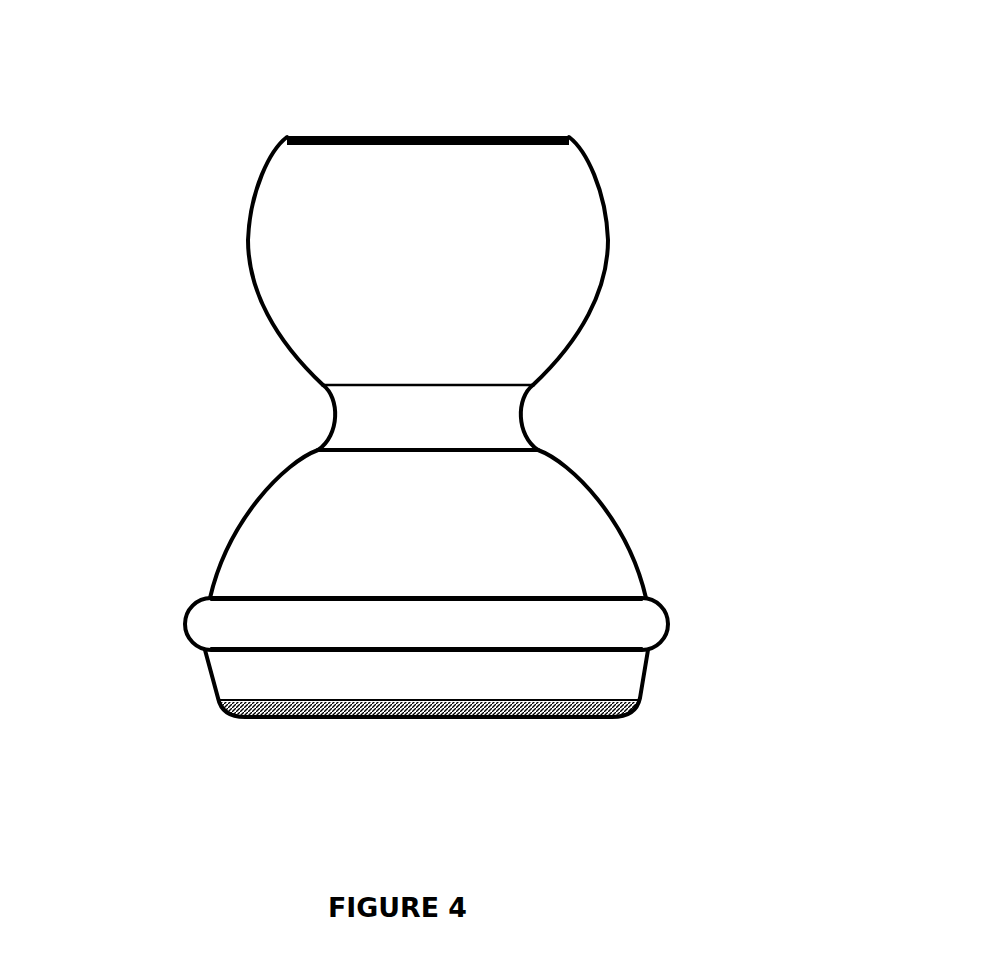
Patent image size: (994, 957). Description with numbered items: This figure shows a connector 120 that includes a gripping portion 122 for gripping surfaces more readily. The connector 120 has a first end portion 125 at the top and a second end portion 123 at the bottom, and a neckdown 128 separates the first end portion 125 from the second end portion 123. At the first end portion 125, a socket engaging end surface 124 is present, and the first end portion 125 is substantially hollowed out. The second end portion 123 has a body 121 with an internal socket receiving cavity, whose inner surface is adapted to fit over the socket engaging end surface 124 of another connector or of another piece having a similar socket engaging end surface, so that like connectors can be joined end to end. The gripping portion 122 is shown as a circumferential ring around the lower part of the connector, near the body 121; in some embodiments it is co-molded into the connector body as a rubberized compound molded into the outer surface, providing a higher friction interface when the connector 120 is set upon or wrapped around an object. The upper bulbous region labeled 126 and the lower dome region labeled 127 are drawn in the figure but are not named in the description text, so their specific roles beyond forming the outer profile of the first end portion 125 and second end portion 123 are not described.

The connector 120 is at (435, 383).
The body 121 is at (588, 492).
The gripping portion 122 is at (662, 608).
The second end portion 123 is at (620, 717).
The socket engaging end surface 124 is at (253, 198).
The first end portion 125 is at (567, 137).
The upper bulb portion 126 is at (373, 195).
The lower dome portion 127 is at (385, 508).
The neckdown 128 is at (522, 420).